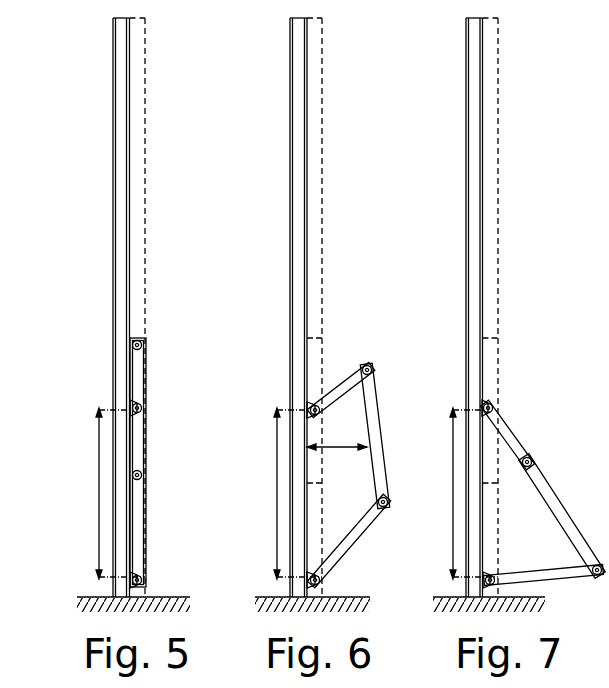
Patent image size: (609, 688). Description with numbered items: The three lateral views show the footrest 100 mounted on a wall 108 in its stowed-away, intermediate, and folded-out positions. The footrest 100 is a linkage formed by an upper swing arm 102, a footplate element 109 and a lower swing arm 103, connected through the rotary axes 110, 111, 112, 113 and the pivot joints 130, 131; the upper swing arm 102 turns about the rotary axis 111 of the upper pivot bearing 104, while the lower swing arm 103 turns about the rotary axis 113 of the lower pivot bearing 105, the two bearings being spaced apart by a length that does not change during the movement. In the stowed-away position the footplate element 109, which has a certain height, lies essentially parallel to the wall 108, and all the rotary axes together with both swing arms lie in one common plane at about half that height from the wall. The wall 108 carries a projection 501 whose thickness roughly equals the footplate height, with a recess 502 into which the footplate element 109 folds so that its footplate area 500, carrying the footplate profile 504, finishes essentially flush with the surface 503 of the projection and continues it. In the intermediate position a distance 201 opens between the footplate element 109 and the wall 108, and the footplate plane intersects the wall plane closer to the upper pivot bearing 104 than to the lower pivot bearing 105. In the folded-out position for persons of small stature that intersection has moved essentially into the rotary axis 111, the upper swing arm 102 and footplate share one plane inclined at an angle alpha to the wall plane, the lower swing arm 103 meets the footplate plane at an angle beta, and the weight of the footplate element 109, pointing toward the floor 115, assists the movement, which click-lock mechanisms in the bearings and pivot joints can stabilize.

In FIG. 5, the footrest 100 is at (148, 484).
In FIG. 6, the footrest 100 is at (380, 350).
In FIG. 7, the footrest 100 is at (544, 460).
In FIG. 5, the upper swing arm 102 is at (136, 366).
In FIG. 5, the lower swing arm 103 is at (184, 530).
In FIG. 5, the upper pivot bearing 104 is at (134, 408).
In FIG. 6, the upper pivot bearing 104 is at (313, 410).
In FIG. 7, the upper pivot bearing 104 is at (486, 407).
In FIG. 5, the lower pivot bearing 105 is at (68, 589).
In FIG. 7, the lower pivot bearing 105 is at (445, 614).
In FIG. 5, the wall 108 is at (122, 118).
In FIG. 6, the wall 108 is at (300, 62).
In FIG. 7, the wall 108 is at (466, 163).
In FIG. 5, the footplate element 109 is at (184, 417).
In FIG. 6, the footplate element 109 is at (391, 448).
In FIG. 7, the footplate element 109 is at (583, 470).
In FIG. 5, the rotary axis 110 is at (143, 345).
In FIG. 5, the rotary axis 111 is at (172, 379).
In FIG. 7, the rotary axis 111 is at (528, 381).
In FIG. 5, the rotary axis 112 is at (141, 477).
In FIG. 5, the rotary axis 113 is at (141, 580).
In FIG. 6, the rotary axis 113 is at (313, 580).
In FIG. 7, the rotary axis 113 is at (489, 580).
In FIG. 5, the floor 115 is at (180, 596).
In FIG. 6, the floor 115 is at (357, 594).
In FIG. 7, the floor 115 is at (528, 594).
In FIG. 6, the pivot joint 130 is at (369, 350).
In FIG. 7, the pivot joint 130 is at (540, 450).
In FIG. 6, the pivot joint 131 is at (394, 482).
In FIG. 7, the pivot joint 131 is at (597, 580).
In FIG. 6, the distance 201 is at (374, 542).
In FIG. 5, the footplate area 500 is at (186, 394).
In FIG. 5, the projection 501 is at (135, 226).
In FIG. 6, the projection 501 is at (313, 118).
In FIG. 7, the projection 501 is at (491, 307).
In FIG. 6, the recess 502 is at (358, 294).
In FIG. 7, the recess 502 is at (556, 311).
In FIG. 5, the surface of the projection 503 is at (145, 163).
In FIG. 5, the footplate profile 504 is at (146, 452).
In FIG. 6, the footplate profile 504 is at (436, 330).
In FIG. 7, the footplate profile 504 is at (470, 493).